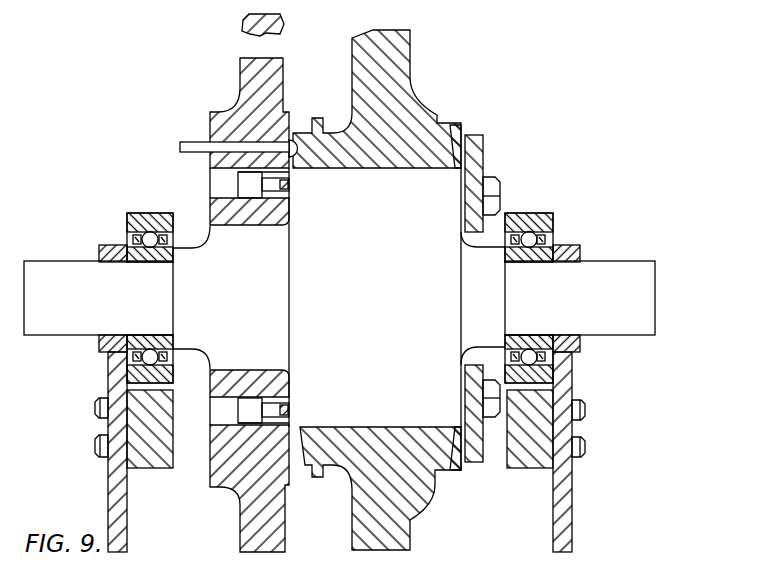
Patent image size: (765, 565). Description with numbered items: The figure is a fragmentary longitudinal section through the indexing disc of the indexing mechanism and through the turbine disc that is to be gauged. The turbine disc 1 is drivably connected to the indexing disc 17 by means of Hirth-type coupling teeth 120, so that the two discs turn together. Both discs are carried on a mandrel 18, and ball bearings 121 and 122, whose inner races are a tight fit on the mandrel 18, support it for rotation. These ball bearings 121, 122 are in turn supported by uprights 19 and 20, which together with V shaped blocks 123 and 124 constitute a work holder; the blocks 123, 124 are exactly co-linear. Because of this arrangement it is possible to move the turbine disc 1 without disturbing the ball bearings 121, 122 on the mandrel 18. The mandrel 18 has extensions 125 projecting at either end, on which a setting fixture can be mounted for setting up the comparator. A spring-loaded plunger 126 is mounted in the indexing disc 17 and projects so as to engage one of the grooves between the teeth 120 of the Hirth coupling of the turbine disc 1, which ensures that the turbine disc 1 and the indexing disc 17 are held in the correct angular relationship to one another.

The turbine disc 1 is at (411, 62).
The indexing disc 17 is at (242, 86).
The spring-loaded plunger 126 is at (194, 142).
The mandrel 18 is at (210, 257).
The Hirth-type coupling teeth 120 is at (462, 133).
The ball bearing 122 is at (148, 214).
The ball bearing 121 is at (539, 215).
The extensions 125 is at (61, 275).
The upright 20 is at (112, 487).
The V shaped block 124 is at (153, 459).
The V shaped block 123 is at (517, 460).
The upright 19 is at (568, 477).